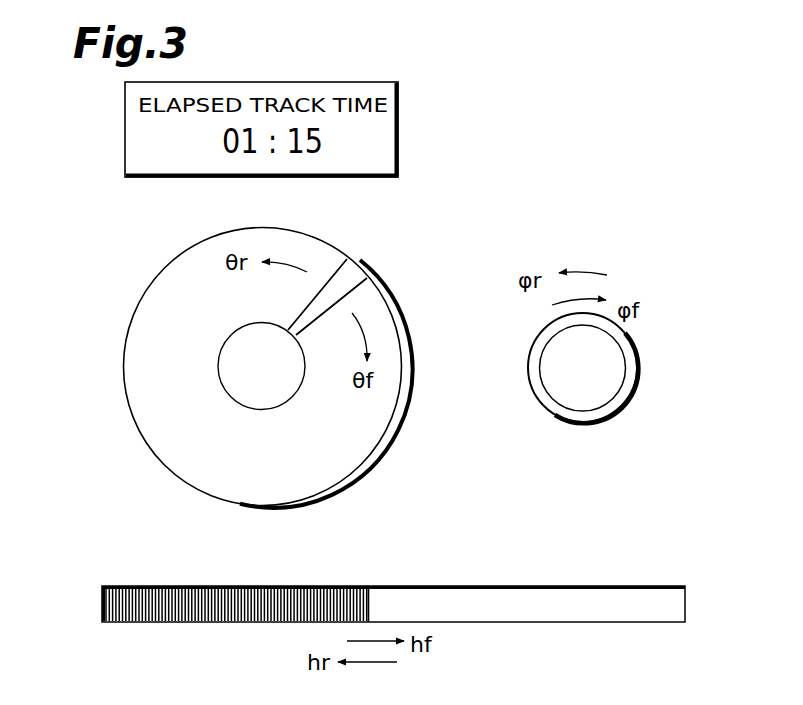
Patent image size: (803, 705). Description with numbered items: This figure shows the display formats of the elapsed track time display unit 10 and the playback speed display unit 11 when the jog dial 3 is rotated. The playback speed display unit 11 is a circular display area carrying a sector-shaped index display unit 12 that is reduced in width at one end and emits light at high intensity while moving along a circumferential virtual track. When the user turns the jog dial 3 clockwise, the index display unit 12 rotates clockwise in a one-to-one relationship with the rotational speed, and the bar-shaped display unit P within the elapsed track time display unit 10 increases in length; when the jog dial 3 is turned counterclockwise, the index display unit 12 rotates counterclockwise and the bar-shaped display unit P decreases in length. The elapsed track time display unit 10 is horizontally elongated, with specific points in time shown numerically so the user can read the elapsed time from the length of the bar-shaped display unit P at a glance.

The playback speed display unit 11 is at (152, 323).
The index display unit 12 is at (350, 278).
The jog dial 3 is at (610, 368).
The elapsed track time display unit 10 is at (400, 615).
The bar-shaped display unit P is at (193, 622).